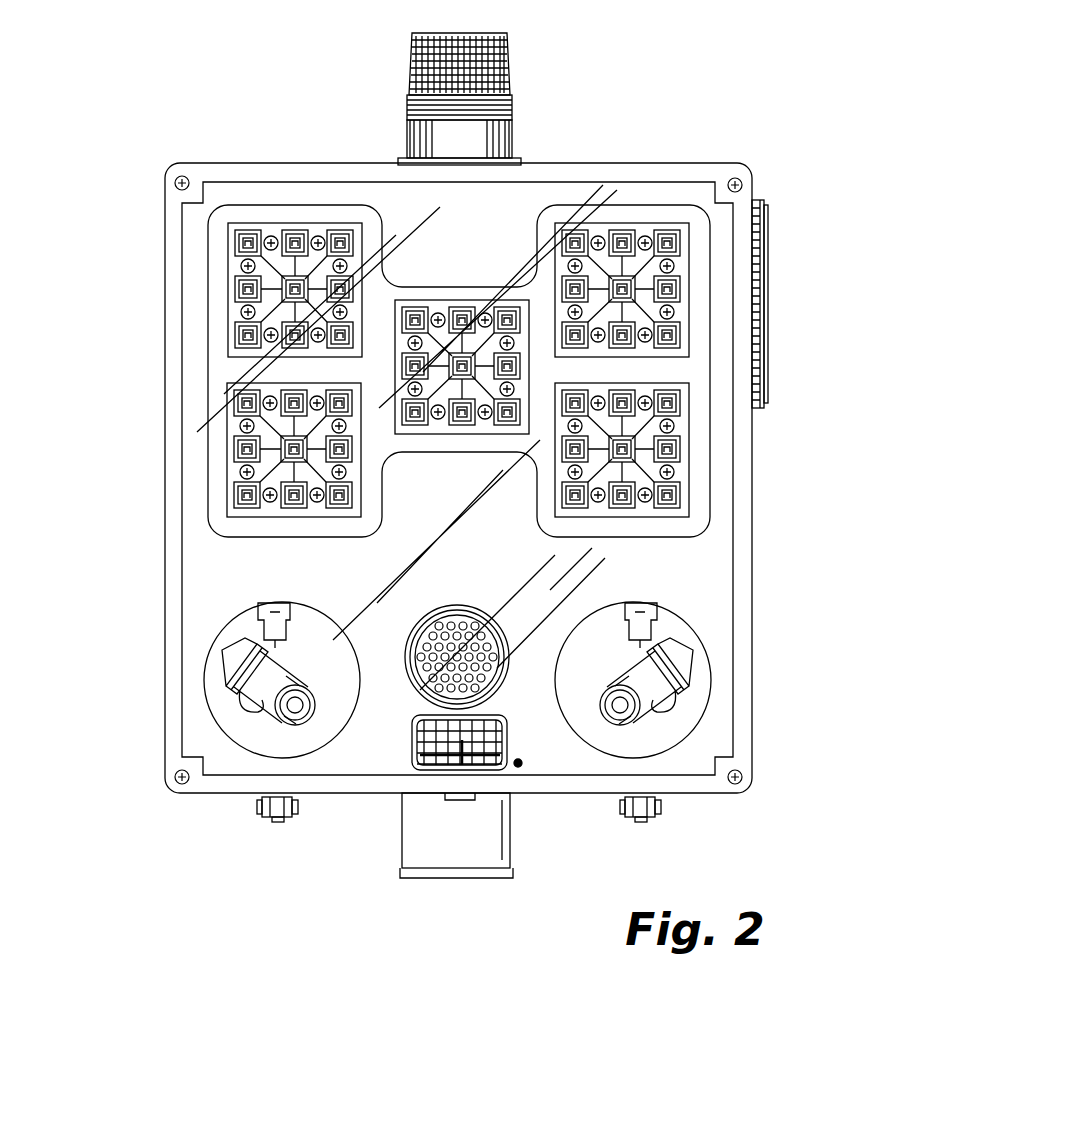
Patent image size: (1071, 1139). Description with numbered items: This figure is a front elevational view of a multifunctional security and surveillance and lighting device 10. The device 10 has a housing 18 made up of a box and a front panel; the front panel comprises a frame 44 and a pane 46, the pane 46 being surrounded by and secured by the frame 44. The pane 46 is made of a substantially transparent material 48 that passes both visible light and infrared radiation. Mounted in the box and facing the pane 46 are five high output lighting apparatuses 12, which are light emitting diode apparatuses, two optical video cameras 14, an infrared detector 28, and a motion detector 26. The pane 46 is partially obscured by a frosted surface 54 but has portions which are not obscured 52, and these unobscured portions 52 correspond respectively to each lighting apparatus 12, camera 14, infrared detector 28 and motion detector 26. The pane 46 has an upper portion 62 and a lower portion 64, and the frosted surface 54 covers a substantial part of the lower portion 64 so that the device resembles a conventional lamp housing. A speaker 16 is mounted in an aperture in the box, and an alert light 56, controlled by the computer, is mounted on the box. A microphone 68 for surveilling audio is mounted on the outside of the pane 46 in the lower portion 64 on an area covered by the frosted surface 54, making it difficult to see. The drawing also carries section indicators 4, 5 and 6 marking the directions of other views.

The section view direction arrow 4 is at (775, 497).
The section view direction arrow 5 is at (275, 130).
The section view direction arrow 6 is at (273, 895).
The multifunctional security and surveillance and lighting device 10 is at (140, 112).
The high output lighting apparatus 12 is at (333, 225).
The optical video camera 14 is at (265, 725).
The speaker 16 is at (763, 320).
The housing 18 is at (750, 607).
The motion detector 26 is at (508, 765).
The infrared detector 28 is at (415, 682).
The frame 44 is at (742, 656).
The pane 46 is at (720, 717).
The substantially transparent material 48 is at (362, 376).
The portions which are not obscured 52 is at (712, 238).
The frosted surface 54 is at (452, 576).
The alert light 56 is at (508, 62).
The upper portion 62 is at (152, 205).
The lower portion 64 is at (152, 565).
The microphone 68 is at (522, 764).